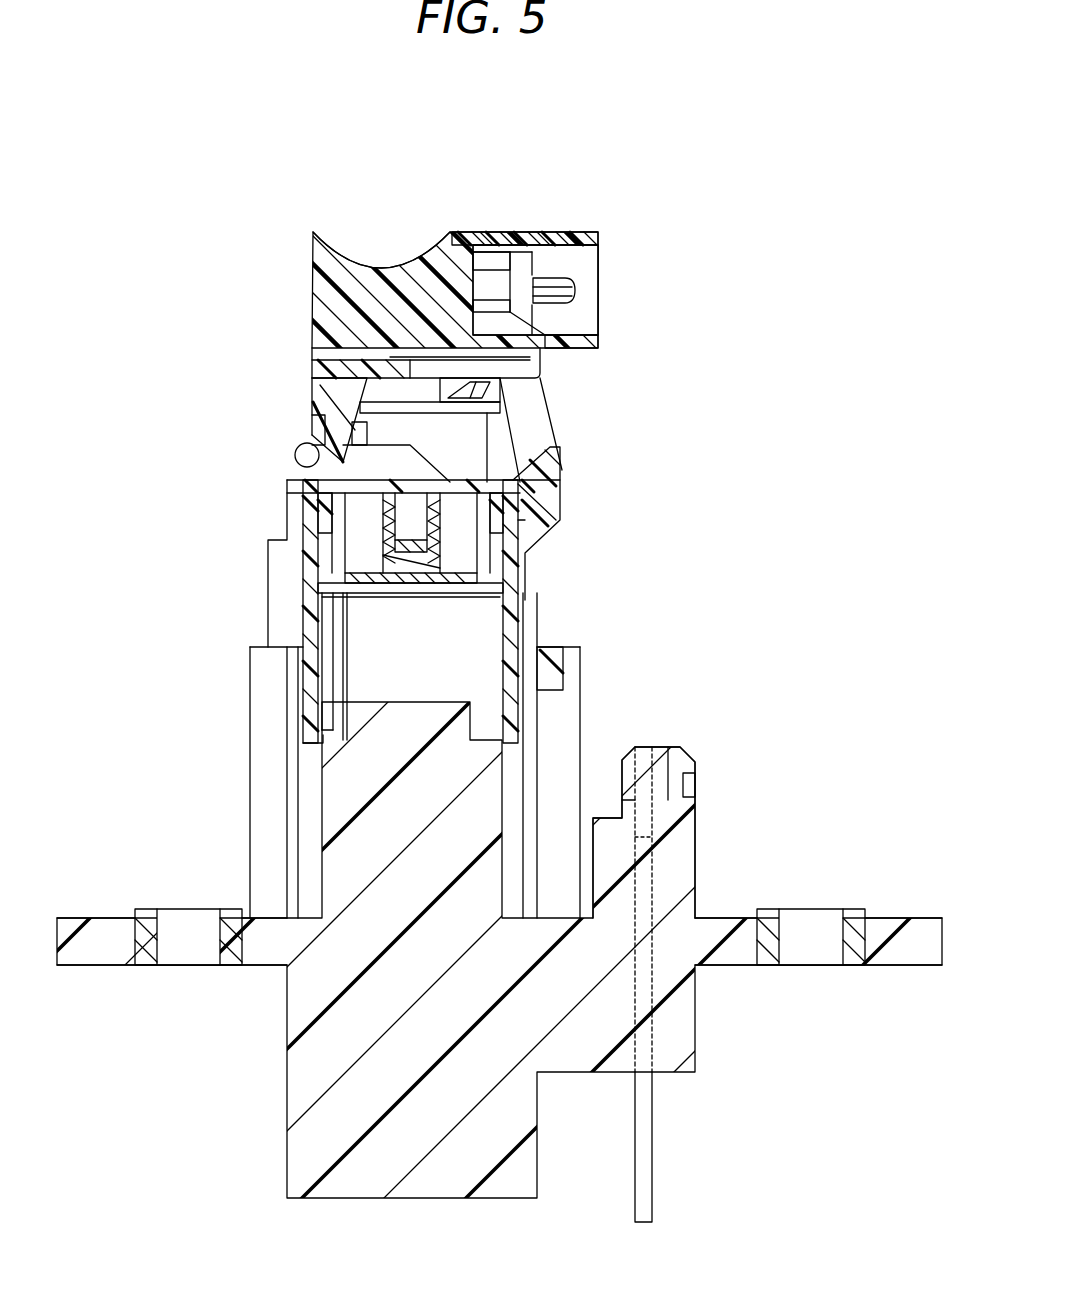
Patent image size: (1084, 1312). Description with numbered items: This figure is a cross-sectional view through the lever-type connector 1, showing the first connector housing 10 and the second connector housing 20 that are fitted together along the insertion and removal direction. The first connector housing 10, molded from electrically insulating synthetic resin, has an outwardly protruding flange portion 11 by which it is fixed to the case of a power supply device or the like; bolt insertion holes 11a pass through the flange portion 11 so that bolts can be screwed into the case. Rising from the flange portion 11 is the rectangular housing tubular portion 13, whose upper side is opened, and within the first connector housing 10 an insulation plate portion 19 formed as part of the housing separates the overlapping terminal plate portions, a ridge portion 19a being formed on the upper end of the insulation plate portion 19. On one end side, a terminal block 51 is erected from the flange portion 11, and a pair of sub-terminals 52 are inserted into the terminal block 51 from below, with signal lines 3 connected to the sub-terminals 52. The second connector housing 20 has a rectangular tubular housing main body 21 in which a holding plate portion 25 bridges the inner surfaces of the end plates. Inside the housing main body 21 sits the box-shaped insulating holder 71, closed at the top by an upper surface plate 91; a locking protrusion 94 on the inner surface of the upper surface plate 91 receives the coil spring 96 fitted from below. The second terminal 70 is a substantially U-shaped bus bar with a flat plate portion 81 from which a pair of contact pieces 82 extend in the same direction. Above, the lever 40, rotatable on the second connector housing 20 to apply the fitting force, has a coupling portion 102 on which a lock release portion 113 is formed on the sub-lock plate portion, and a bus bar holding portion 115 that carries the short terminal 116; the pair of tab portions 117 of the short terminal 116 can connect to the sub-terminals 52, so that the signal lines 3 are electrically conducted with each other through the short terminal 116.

The connector 1 is at (176, 493).
The signal lines 3 is at (655, 1150).
The first connector housing 10 is at (268, 995).
The flange portion 11 is at (95, 968).
The bolt insertion holes 11a is at (170, 945).
The housing tubular portion 13 is at (545, 765).
The insulation plate portion 19 is at (330, 800).
The ridge portion 19a is at (298, 712).
The second connector housing 20 is at (244, 508).
The housing main body 21 is at (300, 610).
The holding plate portion 25 is at (372, 596).
The lever 40 is at (302, 265).
The terminal block 51 is at (697, 775).
The sub-terminals 52 is at (697, 810).
The second terminal 70 is at (522, 517).
The holder 71 is at (338, 467).
The flat plate portion 81 is at (455, 597).
The contact pieces 82 is at (462, 650).
The upper surface plate 91 is at (463, 560).
The locking protrusion 94 is at (397, 585).
The coil spring 96 is at (330, 548).
The coupling portion 102 is at (390, 262).
The lock release portion 113 is at (318, 456).
The bus bar holding portion 115 is at (498, 232).
The short terminal 116 is at (540, 268).
The tab portions 117 is at (575, 291).